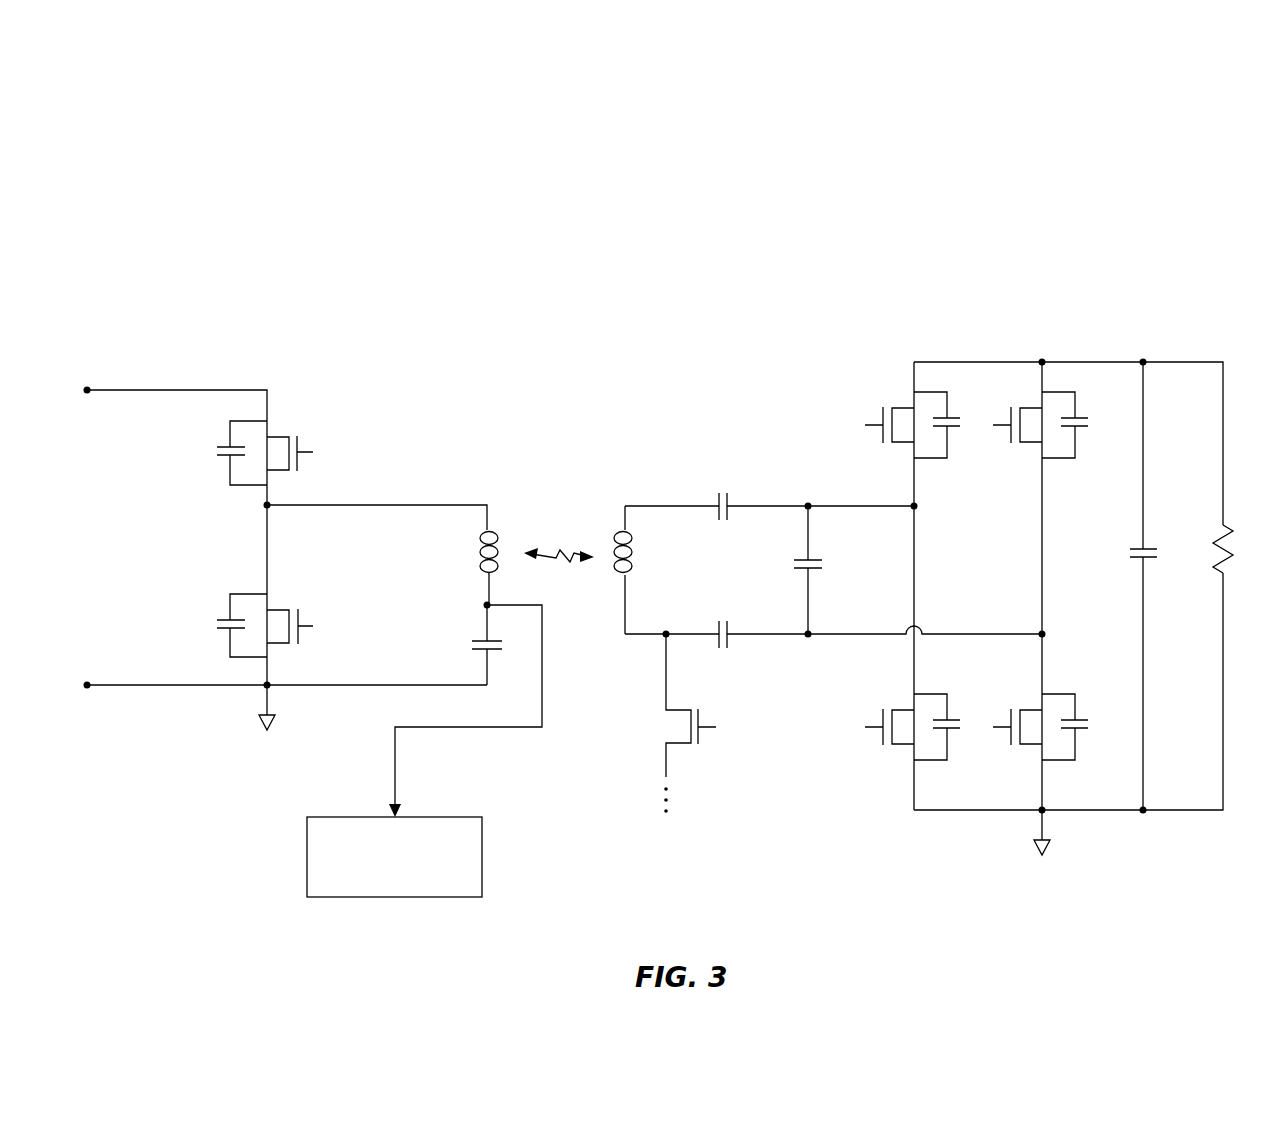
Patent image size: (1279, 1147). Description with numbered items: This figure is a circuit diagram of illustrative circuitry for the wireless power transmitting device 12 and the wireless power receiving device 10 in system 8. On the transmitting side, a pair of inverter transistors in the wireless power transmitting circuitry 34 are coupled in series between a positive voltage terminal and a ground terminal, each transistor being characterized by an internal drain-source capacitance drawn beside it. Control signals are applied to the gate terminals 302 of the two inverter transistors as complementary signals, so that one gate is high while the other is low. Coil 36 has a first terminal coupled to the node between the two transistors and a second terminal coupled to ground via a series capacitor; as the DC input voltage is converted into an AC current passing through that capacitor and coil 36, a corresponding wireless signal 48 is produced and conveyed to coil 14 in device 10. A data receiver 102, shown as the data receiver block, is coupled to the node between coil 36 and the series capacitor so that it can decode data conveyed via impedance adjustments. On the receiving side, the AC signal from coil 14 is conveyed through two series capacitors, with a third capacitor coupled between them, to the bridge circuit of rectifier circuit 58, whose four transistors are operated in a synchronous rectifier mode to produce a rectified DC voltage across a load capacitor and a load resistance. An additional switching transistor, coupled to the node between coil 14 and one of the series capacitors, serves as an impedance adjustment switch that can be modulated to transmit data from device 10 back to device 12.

The system 8 is at (82, 226).
The wireless power transmitting device 12 is at (542, 302).
The wireless power receiving device 10 is at (1228, 302).
The wireless power transmitting circuitry 34 is at (464, 517).
The coil 36 is at (472, 533).
The wireless signal 48 is at (562, 551).
The coil 14 is at (638, 530).
The gate terminals 302 is at (314, 654).
The data receiver 102 is at (413, 897).
The rectifier circuit 58 is at (1098, 873).